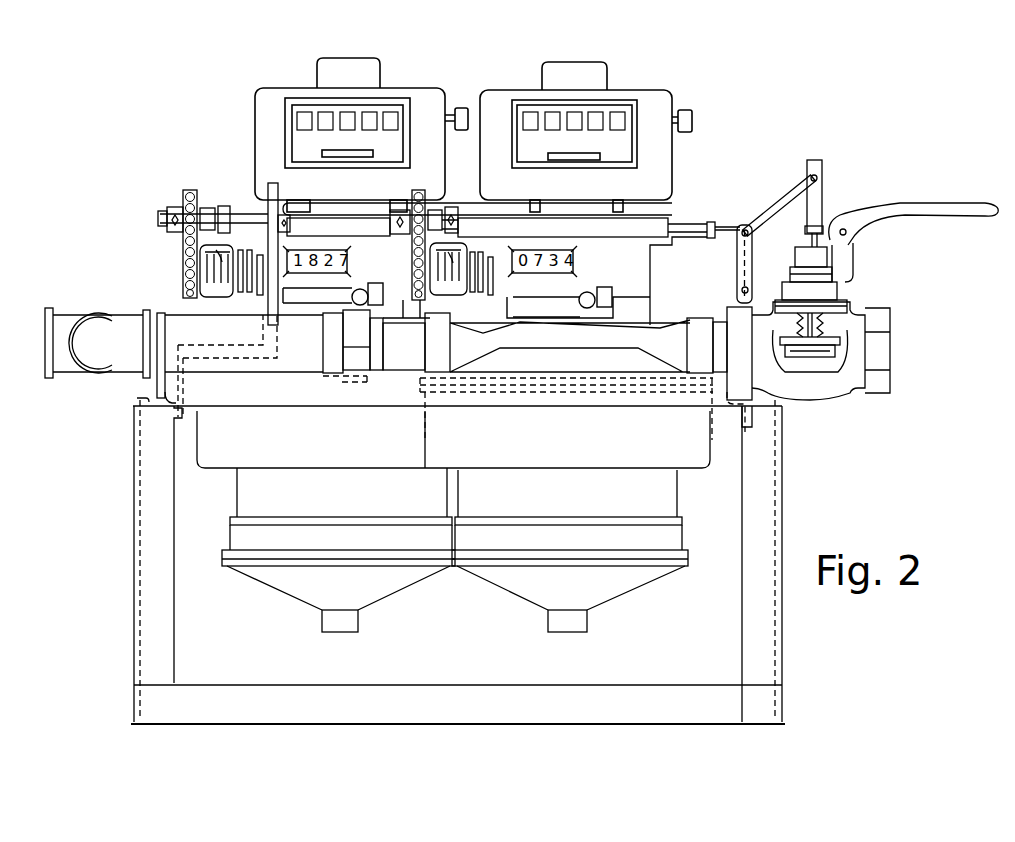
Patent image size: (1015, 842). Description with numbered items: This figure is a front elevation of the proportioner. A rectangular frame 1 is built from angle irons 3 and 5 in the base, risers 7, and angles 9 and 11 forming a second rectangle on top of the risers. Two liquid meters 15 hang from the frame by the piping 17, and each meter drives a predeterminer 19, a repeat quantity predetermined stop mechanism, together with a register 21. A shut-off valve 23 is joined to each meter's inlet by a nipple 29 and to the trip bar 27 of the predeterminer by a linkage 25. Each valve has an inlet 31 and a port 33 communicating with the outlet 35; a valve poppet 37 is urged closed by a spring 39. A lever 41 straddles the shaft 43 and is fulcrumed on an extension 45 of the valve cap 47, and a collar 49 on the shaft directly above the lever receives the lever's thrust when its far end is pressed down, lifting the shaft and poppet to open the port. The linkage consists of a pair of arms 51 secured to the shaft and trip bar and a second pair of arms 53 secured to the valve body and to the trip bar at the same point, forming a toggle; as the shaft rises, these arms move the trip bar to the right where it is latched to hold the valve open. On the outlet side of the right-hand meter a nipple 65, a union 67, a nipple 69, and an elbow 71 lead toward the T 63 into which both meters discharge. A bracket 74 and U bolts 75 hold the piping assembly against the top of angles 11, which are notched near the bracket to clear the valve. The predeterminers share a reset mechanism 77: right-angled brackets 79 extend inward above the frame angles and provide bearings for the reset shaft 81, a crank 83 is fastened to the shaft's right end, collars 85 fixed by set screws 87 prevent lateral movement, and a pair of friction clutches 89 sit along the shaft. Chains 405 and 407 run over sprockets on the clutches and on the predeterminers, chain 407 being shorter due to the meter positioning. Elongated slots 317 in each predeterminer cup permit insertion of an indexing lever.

The rectangular frame 1 is at (778, 667).
The angle iron 3 is at (640, 722).
The angle iron 5 is at (785, 705).
The riser 7 is at (137, 498).
The angle 9 is at (303, 404).
The angle 11 is at (137, 399).
The liquid meter 15 is at (240, 496).
The piping 17 is at (132, 308).
The predeterminer 19 is at (213, 292).
The register 21 is at (380, 62).
The shut-off valve 23 is at (840, 396).
The linkage 25 is at (780, 192).
The trip bar 27 is at (683, 247).
The nipple 29 is at (722, 312).
The inlet 31 is at (884, 353).
The port 33 is at (790, 362).
The outlet 35 is at (740, 307).
The valve poppet 37 is at (813, 356).
The spring 39 is at (852, 310).
The lever 41 is at (940, 212).
The shaft 43 is at (822, 195).
The extension 45 is at (853, 254).
The valve cap 47 is at (845, 290).
The collar 49 is at (805, 231).
The arm 51 is at (768, 210).
The arm 53 is at (737, 255).
The T 63 is at (75, 315).
The nipple 65 is at (405, 368).
The union 67 is at (326, 341).
The nipple 69 is at (252, 370).
The elbow 71 is at (104, 370).
The bracket 74 is at (713, 346).
The U bolt 75 is at (150, 386).
The reset mechanism 77 is at (680, 218).
The right-angled bracket 79 is at (278, 186).
The reset shaft 81 is at (240, 213).
The crank 83 is at (790, 274).
The collar 85 is at (288, 203).
The set screw 87 is at (290, 233).
The friction clutch 89 is at (178, 204).
The elongated slot 317 is at (216, 250).
The chain 405 is at (412, 252).
The chain 407 is at (183, 252).